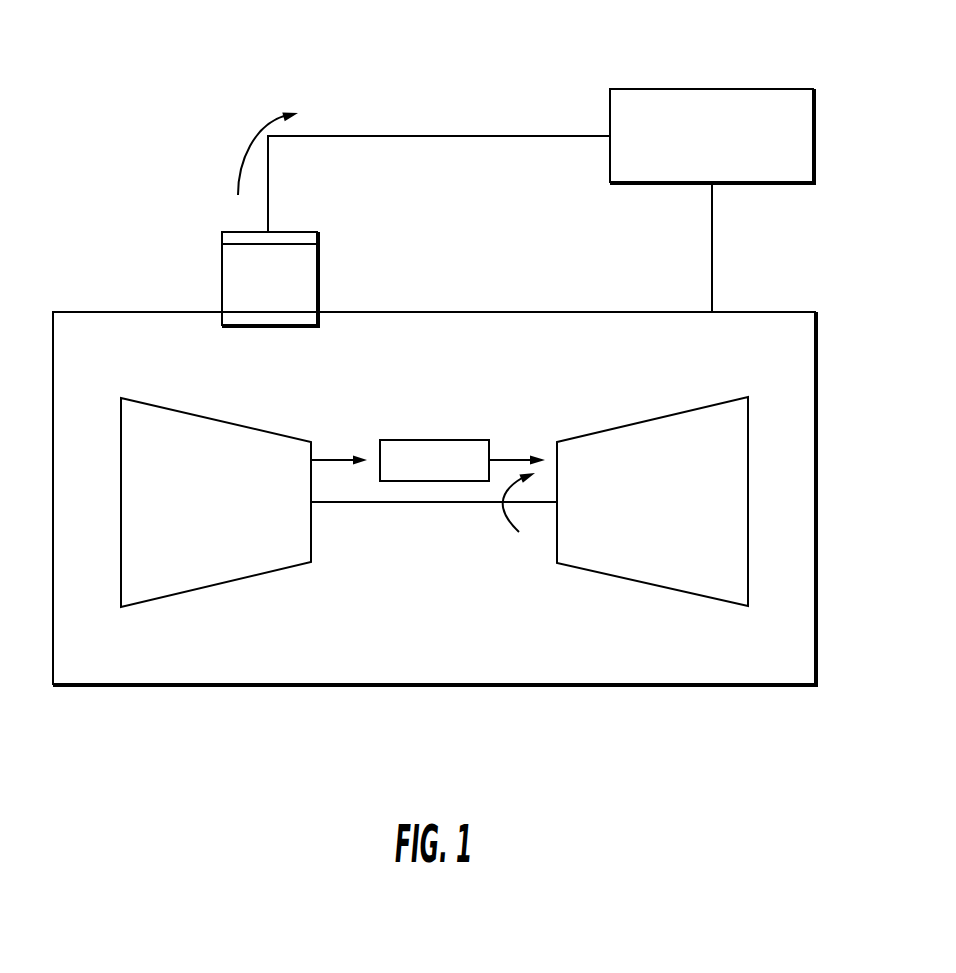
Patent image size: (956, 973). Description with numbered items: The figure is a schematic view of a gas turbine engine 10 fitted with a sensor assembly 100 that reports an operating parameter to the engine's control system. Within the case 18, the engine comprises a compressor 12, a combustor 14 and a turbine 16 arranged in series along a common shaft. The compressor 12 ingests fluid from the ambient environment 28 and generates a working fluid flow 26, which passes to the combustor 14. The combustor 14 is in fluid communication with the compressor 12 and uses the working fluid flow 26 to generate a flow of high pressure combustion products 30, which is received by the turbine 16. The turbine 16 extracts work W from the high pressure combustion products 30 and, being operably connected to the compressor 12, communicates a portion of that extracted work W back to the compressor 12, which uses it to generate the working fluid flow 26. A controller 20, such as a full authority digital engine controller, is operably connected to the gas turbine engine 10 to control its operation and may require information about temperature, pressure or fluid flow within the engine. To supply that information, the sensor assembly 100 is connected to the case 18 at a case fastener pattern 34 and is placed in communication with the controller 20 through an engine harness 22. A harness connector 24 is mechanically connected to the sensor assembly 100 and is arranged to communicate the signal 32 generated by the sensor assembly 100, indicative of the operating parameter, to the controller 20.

The gas turbine engine 10 is at (137, 728).
The compressor 12 is at (282, 568).
The combustor 14 is at (440, 440).
The turbine 16 is at (618, 577).
The case 18 is at (663, 685).
The controller 20 is at (683, 89).
The engine harness 22 is at (435, 136).
The harness connector 24 is at (318, 238).
The working fluid flow 26 is at (326, 458).
The ambient environment 28 is at (80, 249).
The high pressure combustion products 30 is at (507, 452).
The signal 32 is at (238, 142).
The case fastener pattern 34 is at (270, 328).
The sensor assembly 100 is at (287, 291).
The work W is at (503, 515).